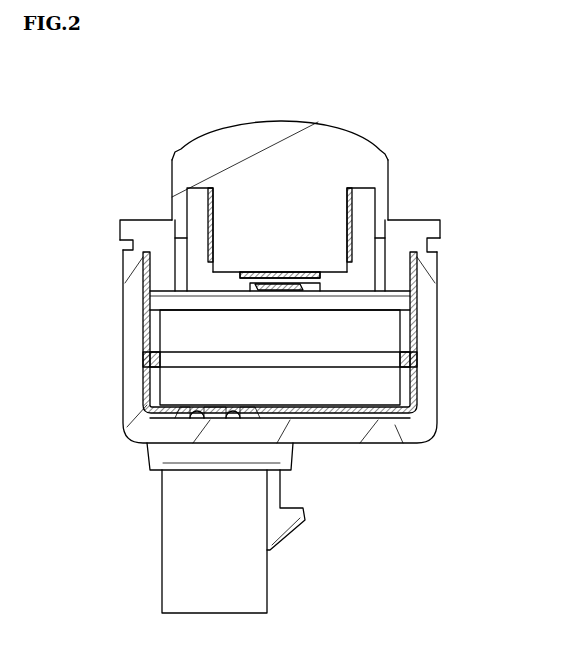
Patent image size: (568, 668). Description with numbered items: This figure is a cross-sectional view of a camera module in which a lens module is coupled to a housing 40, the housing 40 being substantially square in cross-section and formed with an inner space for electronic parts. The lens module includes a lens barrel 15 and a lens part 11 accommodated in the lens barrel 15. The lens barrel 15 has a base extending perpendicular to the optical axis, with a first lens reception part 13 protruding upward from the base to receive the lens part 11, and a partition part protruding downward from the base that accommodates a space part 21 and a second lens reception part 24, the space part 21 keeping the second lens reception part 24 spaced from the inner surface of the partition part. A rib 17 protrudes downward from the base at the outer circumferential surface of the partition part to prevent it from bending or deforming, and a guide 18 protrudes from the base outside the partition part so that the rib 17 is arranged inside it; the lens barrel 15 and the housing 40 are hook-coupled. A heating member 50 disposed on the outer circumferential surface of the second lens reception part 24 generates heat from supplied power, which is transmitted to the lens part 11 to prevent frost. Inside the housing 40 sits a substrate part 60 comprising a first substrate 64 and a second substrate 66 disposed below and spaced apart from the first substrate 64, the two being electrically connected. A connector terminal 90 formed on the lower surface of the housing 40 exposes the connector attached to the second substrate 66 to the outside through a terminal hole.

The lens part 11 is at (322, 121).
The first lens reception part 13 is at (172, 168).
The space part 21 is at (195, 262).
The second lens reception part 24 is at (312, 262).
The heating member 50 is at (350, 242).
The lens barrel 15 is at (125, 223).
The guide 18 is at (122, 246).
The rib 17 is at (148, 275).
The housing 40 is at (128, 366).
The substrate part 60 is at (490, 300).
The first substrate 64 is at (372, 303).
The second substrate 66 is at (378, 356).
The connector terminal 90 is at (177, 531).